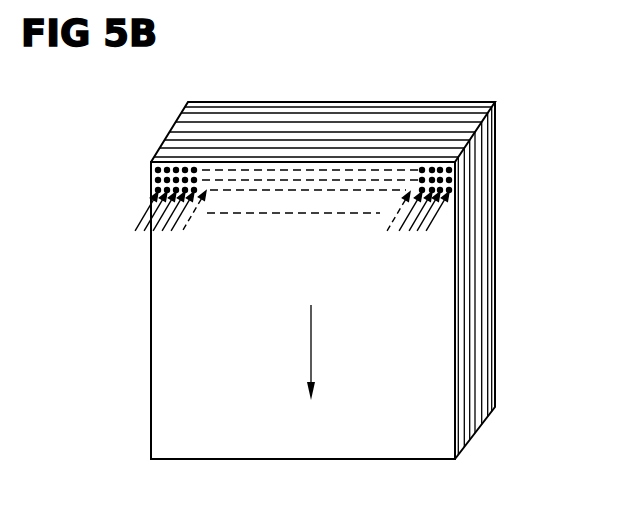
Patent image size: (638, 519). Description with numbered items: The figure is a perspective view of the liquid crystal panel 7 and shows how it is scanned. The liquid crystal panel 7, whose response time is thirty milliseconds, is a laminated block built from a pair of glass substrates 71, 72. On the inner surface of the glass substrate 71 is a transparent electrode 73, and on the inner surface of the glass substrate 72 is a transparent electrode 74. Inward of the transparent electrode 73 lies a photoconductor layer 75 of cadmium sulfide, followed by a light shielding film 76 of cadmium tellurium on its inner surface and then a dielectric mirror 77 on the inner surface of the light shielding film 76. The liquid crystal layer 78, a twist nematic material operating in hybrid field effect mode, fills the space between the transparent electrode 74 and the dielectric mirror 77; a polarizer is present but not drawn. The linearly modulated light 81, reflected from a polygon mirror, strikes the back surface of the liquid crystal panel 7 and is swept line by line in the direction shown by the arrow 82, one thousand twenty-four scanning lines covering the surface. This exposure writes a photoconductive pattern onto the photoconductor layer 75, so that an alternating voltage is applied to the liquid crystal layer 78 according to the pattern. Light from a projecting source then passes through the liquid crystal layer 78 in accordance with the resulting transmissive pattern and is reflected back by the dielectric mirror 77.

The liquid crystal panel 7 is at (167, 408).
The glass substrate 71 is at (330, 163).
The transparent electrode 73 is at (390, 153).
The photoconductor layer 75 is at (438, 147).
The light shielding film 76 is at (470, 162).
The dielectric mirror 77 is at (477, 208).
The liquid crystal layer 78 is at (483, 257).
The transparent electrode 74 is at (488, 311).
The glass substrate 72 is at (489, 361).
The linearly modulated light 81 is at (147, 212).
The arrow 82 is at (311, 354).